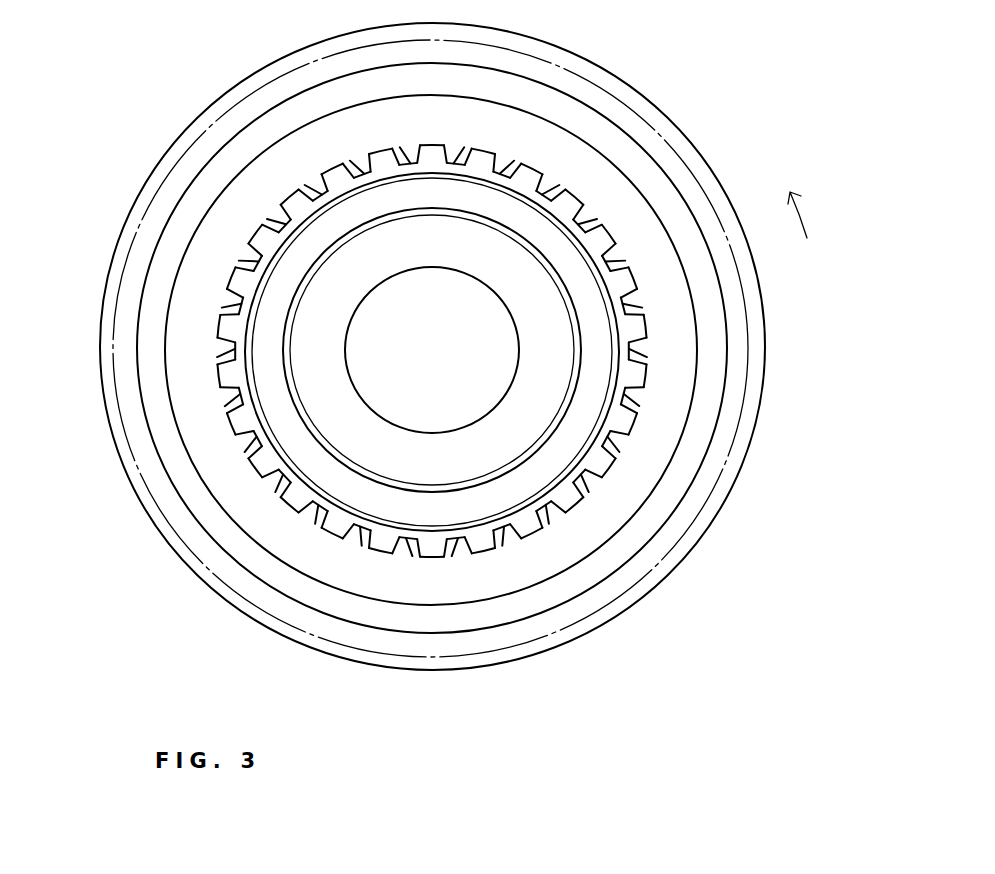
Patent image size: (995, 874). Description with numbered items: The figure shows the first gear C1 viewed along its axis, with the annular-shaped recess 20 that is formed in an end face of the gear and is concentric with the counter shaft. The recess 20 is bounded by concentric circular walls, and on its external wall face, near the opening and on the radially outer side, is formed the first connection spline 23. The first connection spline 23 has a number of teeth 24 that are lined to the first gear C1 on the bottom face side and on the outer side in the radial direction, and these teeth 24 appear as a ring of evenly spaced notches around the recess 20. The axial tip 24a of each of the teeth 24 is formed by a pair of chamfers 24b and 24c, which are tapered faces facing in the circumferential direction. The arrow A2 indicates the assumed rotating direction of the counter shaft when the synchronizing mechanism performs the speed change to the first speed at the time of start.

The annular-shaped recess 20 is at (583, 290).
The first connection spline 23 is at (433, 167).
The teeth 24 is at (603, 218).
The tip 24a is at (247, 250).
The chamfer 24b is at (250, 258).
The chamfer 24c is at (283, 213).
The first gear C1 is at (719, 145).
The arrow A2 is at (800, 212).